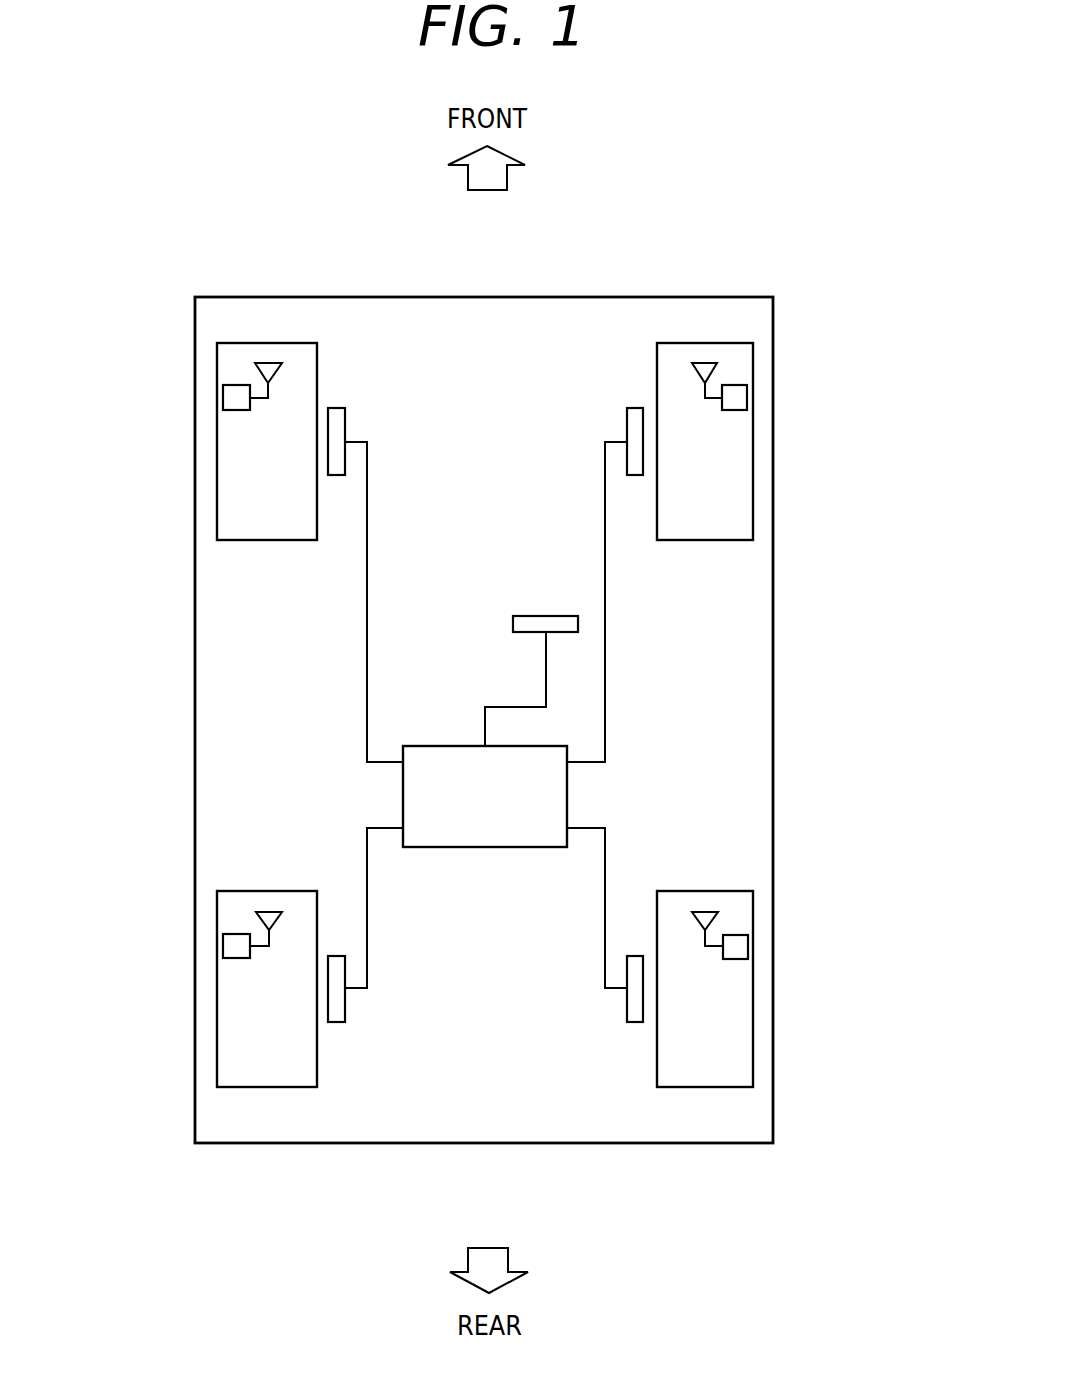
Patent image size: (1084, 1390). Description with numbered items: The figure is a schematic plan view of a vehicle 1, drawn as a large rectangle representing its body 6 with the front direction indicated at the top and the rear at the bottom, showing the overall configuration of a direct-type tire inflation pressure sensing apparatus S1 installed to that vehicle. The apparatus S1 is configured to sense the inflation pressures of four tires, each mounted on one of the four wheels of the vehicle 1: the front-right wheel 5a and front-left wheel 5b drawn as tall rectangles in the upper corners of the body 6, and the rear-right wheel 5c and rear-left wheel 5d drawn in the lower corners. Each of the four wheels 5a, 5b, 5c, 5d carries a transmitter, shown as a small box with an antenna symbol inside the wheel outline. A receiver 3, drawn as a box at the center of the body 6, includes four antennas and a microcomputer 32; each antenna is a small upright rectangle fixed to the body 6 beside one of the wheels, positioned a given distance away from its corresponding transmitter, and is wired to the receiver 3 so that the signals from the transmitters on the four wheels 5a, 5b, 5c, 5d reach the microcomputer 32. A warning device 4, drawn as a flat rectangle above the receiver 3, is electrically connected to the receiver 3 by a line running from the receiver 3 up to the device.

The tire inflation pressure sensing apparatus S1 is at (863, 271).
The vehicle 1 is at (783, 640).
The body 6 is at (763, 583).
The receiver 3 is at (449, 855).
The microcomputer 32 is at (528, 836).
The warning device 4 is at (557, 622).
The front-right wheel 5a is at (745, 493).
The front-left wheel 5b is at (228, 493).
The rear-right wheel 5c is at (745, 1042).
The rear-left wheel 5d is at (228, 1043).